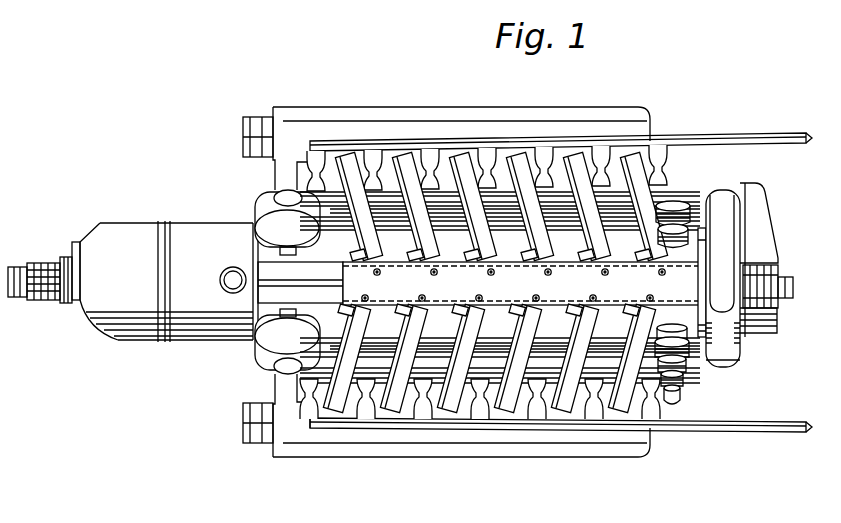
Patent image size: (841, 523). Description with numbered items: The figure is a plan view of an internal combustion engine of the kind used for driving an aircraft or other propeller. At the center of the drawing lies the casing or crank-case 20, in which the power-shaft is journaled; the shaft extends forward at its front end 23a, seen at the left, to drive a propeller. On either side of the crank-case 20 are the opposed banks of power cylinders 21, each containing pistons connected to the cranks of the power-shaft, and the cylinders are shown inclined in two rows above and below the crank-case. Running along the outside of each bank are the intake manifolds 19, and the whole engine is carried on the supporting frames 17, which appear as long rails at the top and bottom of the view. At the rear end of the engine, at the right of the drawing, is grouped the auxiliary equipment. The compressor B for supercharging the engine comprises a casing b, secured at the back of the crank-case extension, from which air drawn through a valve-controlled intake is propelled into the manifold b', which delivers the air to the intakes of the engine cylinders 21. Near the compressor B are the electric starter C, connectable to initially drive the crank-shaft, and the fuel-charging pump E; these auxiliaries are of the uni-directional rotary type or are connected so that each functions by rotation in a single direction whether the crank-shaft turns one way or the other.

The supporting frame 17 is at (733, 141).
The intake manifold 19 is at (643, 178).
The crank-case 20 is at (501, 285).
The power cylinder 21 is at (447, 150).
The front end of power-shaft 23a is at (52, 259).
The fuel-charging pump E is at (680, 210).
The electric starter C is at (689, 371).
The compressor B is at (766, 260).
The casing b is at (738, 283).
The manifold b' is at (706, 282).